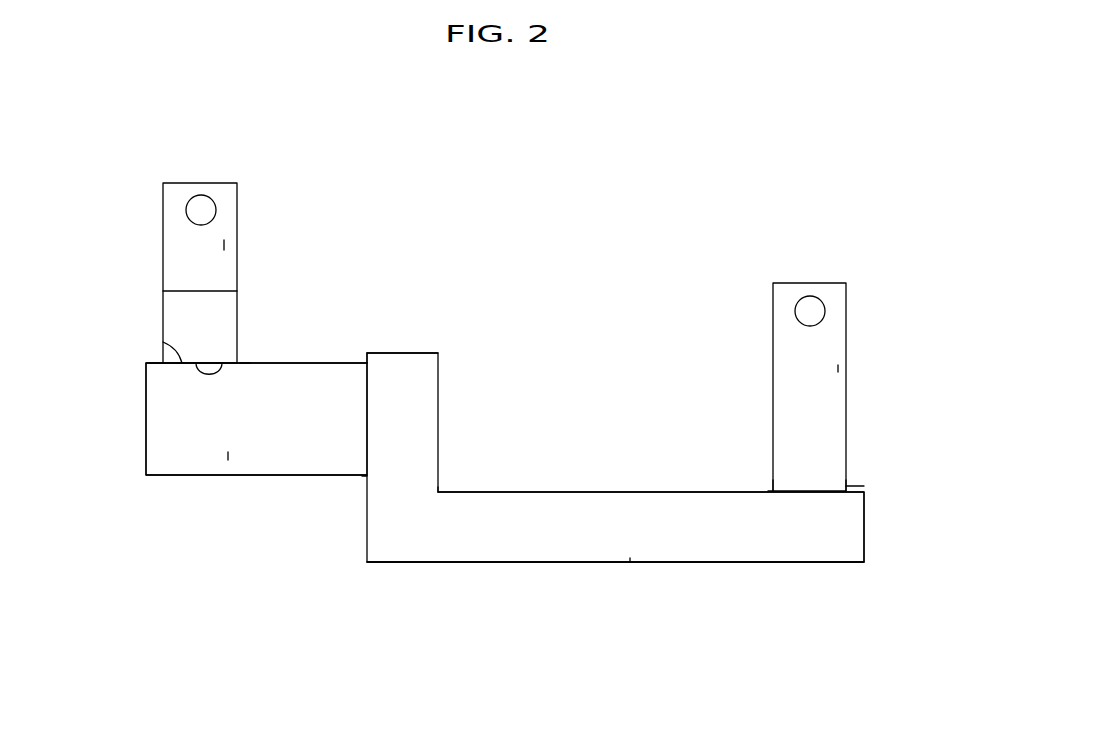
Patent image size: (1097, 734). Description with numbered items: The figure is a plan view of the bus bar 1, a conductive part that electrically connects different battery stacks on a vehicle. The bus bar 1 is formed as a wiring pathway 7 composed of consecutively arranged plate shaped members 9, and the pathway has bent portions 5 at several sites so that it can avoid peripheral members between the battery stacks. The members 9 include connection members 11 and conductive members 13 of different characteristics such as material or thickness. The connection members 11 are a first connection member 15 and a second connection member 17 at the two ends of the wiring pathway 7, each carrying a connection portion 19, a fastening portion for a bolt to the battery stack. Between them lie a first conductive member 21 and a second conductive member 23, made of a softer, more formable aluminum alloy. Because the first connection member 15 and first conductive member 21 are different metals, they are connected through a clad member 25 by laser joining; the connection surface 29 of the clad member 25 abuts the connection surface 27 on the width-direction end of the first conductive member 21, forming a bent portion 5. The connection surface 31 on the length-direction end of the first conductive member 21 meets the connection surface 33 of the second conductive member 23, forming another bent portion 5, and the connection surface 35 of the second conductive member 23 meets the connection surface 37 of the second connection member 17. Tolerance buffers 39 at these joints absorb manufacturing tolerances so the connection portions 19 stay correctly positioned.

The bus bar 1 is at (563, 210).
The bent portion 5 is at (245, 363).
The wiring pathway 7 is at (466, 590).
The plate shaped member 9 is at (224, 245).
The connection member 11 is at (445, 337).
The conductive member 13 is at (505, 404).
The first connection member 15 is at (174, 238).
The second connection member 17 is at (781, 350).
The connection portion 19 is at (208, 210).
The first conductive member 21 is at (305, 388).
The second conductive member 23 is at (570, 503).
The clad member 25 is at (182, 303).
The connection surface 27 is at (163, 342).
The connection surface 29 is at (222, 366).
The connection surface 31 is at (367, 400).
The connection surface 33 is at (367, 428).
The connection surface 35 is at (818, 490).
The connection surface 37 is at (803, 492).
The tolerance buffer 39 is at (155, 361).